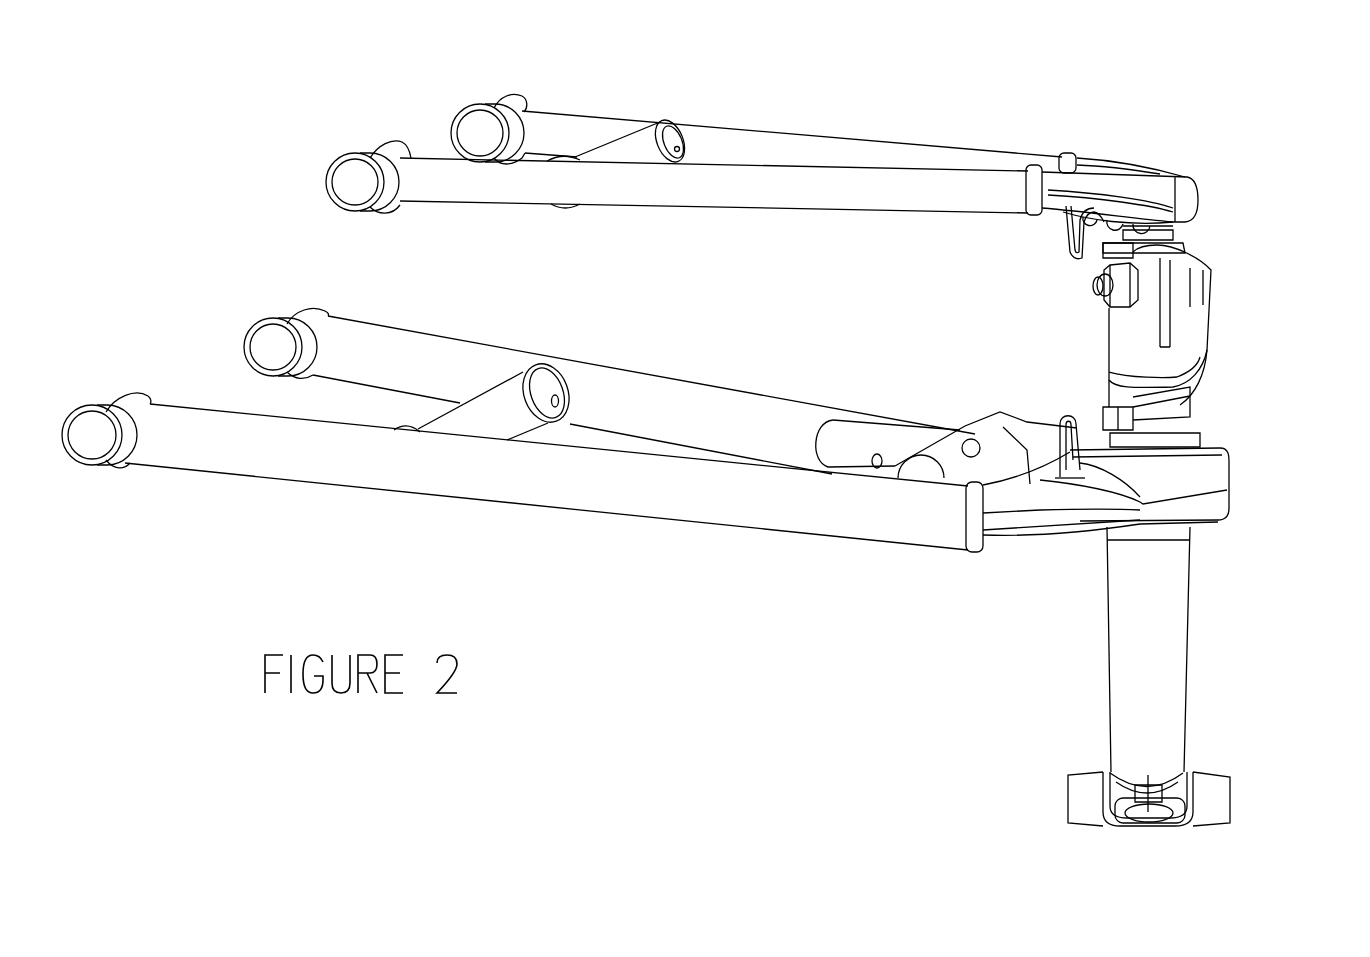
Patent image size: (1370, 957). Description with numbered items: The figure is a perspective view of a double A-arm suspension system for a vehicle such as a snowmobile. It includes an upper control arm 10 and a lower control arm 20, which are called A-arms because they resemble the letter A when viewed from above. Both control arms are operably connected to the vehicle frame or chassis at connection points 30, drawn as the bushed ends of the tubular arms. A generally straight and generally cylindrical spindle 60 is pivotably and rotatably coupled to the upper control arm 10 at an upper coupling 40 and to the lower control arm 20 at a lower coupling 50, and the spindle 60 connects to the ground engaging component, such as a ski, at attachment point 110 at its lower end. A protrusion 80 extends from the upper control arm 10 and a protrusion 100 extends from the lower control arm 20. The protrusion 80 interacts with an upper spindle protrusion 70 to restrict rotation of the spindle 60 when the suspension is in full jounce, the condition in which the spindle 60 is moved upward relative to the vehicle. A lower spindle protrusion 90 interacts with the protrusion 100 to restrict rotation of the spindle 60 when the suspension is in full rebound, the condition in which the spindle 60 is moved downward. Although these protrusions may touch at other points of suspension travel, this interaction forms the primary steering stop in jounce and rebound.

The upper control arm 10 is at (740, 140).
The lower control arm 20 is at (687, 405).
The connection points 30 is at (500, 102).
The upper coupling 40 is at (1190, 165).
The lower coupling 50 is at (1249, 484).
The spindle 60 is at (1150, 358).
The upper spindle protrusion 70 is at (1108, 256).
The protrusion 80 is at (1068, 242).
The lower spindle protrusion 90 is at (1147, 418).
The protrusion 100 is at (1066, 440).
The attachment point 110 is at (1080, 798).